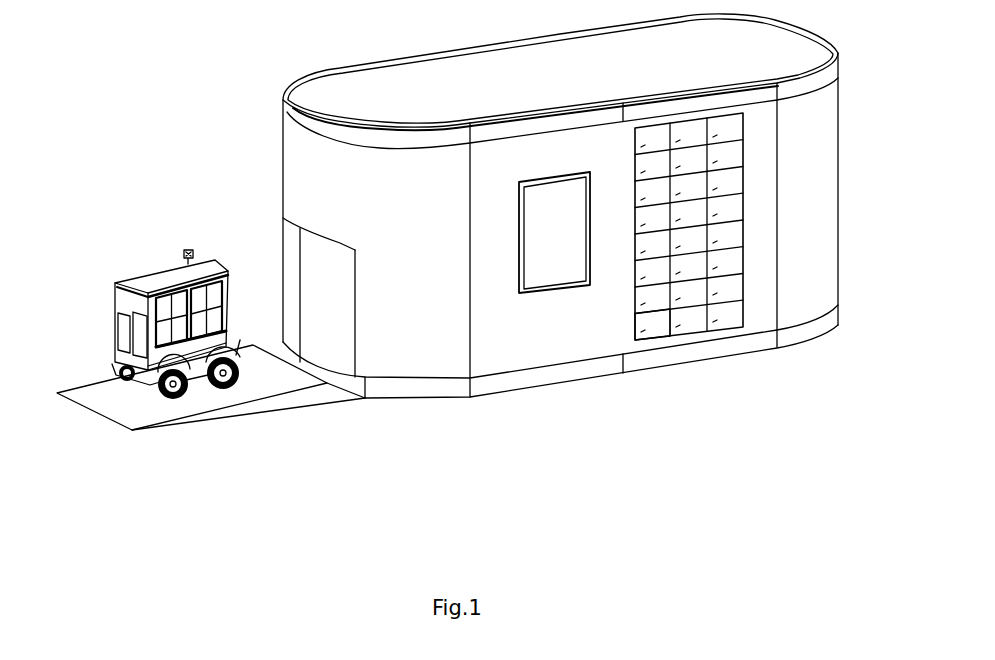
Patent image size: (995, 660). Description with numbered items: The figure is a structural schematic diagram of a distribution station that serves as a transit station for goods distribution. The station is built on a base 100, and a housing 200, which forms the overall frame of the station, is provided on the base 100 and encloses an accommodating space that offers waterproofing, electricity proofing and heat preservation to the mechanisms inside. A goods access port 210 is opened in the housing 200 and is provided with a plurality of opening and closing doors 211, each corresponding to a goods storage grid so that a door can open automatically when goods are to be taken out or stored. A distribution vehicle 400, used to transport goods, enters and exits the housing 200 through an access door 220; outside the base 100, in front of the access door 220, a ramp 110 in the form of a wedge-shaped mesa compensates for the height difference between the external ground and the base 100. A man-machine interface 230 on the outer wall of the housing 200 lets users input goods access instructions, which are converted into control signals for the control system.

The base 100 is at (678, 364).
The ramp 110 is at (313, 393).
The housing 200 is at (383, 80).
The goods access port 210 is at (725, 328).
The opening and closing door 211 is at (653, 328).
The access door 220 is at (293, 247).
The man-machine interface 230 is at (553, 277).
The distribution vehicle 400 is at (170, 280).